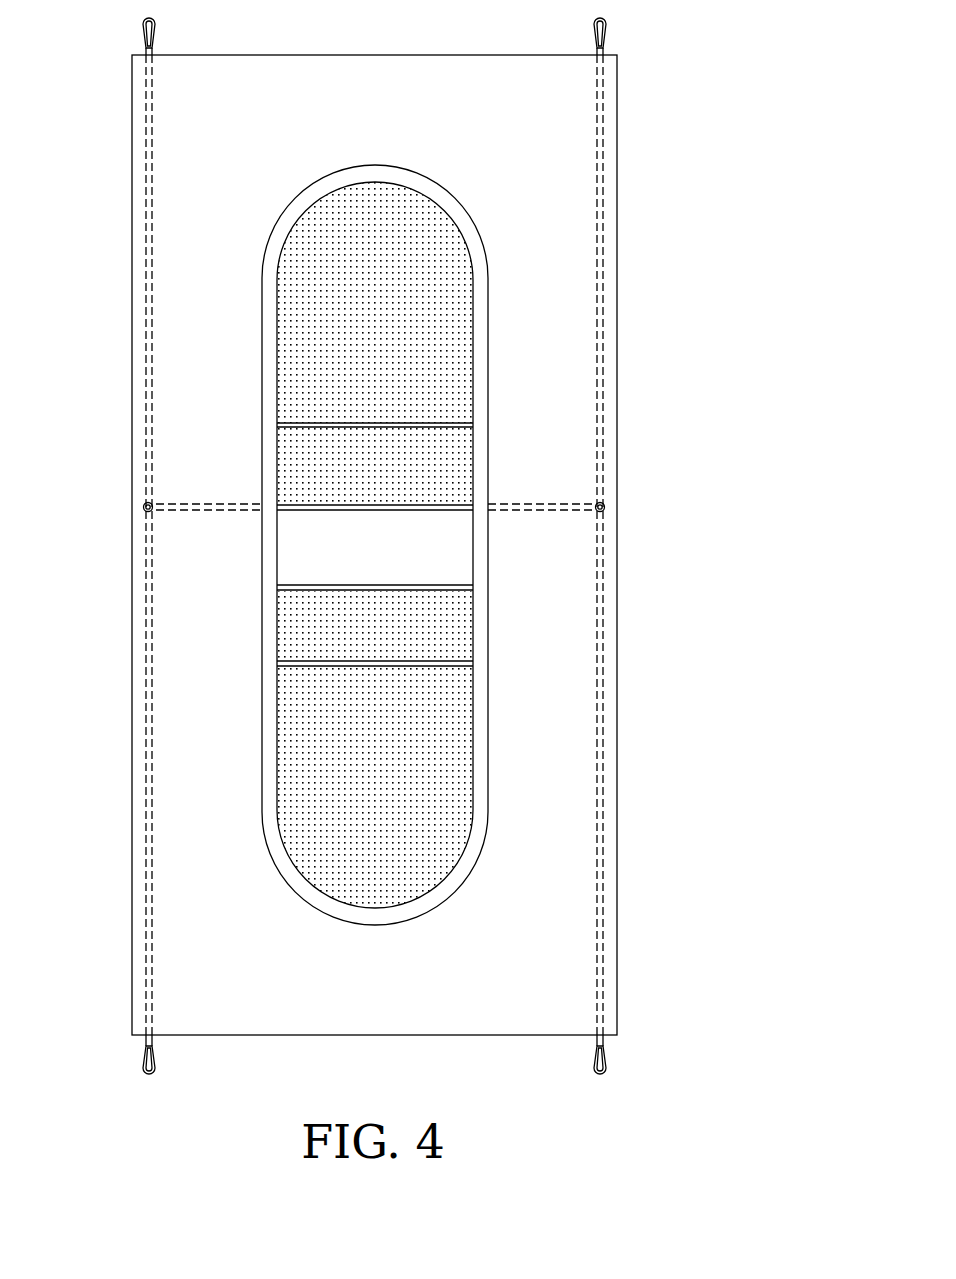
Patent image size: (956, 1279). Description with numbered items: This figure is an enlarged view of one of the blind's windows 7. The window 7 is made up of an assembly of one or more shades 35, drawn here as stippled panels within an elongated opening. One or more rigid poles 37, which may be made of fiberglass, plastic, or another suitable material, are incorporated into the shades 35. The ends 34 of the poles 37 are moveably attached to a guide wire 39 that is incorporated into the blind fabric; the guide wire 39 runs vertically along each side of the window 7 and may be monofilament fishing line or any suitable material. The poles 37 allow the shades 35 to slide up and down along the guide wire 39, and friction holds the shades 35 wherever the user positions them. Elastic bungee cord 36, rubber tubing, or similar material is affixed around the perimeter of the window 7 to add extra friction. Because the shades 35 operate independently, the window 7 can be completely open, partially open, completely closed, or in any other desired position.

The window 7 is at (683, 219).
The ends of the poles 34 is at (142, 507).
The shade 35 is at (420, 327).
The elastic bungee cord 36 is at (268, 625).
The rigid pole 37 is at (333, 424).
The guide wire 39 is at (142, 108).